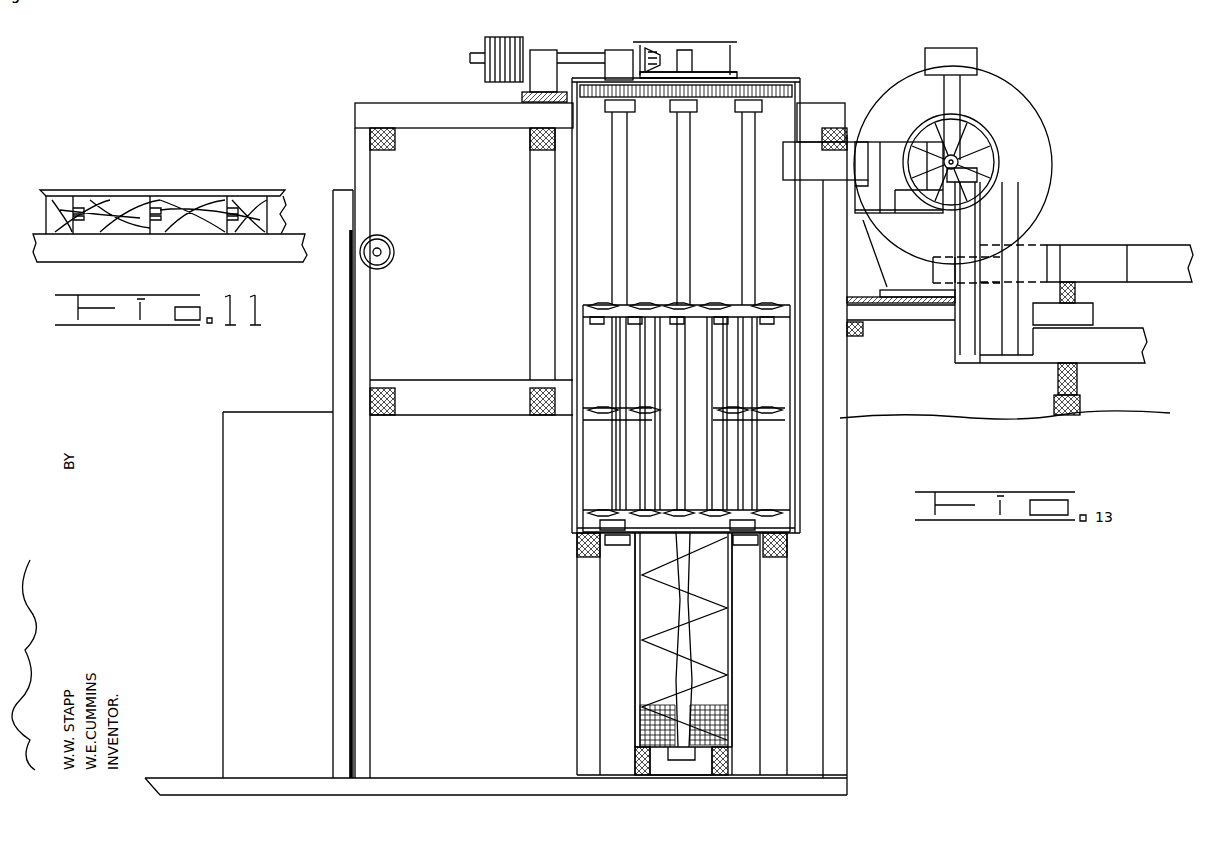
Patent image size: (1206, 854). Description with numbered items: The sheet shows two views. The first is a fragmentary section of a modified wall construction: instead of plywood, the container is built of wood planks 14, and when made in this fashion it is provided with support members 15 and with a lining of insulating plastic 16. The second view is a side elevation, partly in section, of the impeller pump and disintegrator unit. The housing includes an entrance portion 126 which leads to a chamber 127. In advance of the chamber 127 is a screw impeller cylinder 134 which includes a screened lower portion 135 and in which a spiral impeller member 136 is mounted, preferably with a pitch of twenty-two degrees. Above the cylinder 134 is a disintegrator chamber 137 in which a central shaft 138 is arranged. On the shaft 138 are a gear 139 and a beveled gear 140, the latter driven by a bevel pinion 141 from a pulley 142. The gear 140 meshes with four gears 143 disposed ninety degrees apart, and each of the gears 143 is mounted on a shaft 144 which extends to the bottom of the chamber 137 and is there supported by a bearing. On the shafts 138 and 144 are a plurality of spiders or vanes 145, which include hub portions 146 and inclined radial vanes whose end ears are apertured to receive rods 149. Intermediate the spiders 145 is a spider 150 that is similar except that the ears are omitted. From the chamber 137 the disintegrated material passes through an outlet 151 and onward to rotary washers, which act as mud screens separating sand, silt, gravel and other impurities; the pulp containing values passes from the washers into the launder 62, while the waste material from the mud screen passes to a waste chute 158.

In FIG. 11, the wood planks 14 is at (245, 238).
In FIG. 13, the wood planks 14 is at (810, 455).
In FIG. 11, the support members 15 is at (192, 262).
In FIG. 11, the lining of insulating plastic 16 is at (232, 176).
In FIG. 13, the launder 62 is at (1110, 250).
In FIG. 13, the entrance portion 126 is at (255, 625).
In FIG. 13, the chamber 127 is at (455, 780).
In FIG. 13, the screw impeller cylinder 134 is at (728, 625).
In FIG. 13, the screened lower portion 135 is at (728, 722).
In FIG. 13, the spiral impeller member 136 is at (690, 662).
In FIG. 13, the disintegrator chamber 137 is at (800, 363).
In FIG. 13, the central shaft 138 is at (690, 185).
In FIG. 13, the gear 139 is at (708, 102).
In FIG. 13, the beveled gear 140 is at (735, 78).
In FIG. 13, the bevel pinion 141 is at (650, 46).
In FIG. 13, the pulley 142 is at (523, 46).
In FIG. 13, the gears 143 is at (798, 82).
In FIG. 13, the shaft 144 is at (742, 238).
In FIG. 13, the spiders 145 is at (650, 305).
In FIG. 13, the hub portions 146 is at (690, 310).
In FIG. 13, the rods 149 is at (760, 397).
In FIG. 13, the spider 150 is at (760, 413).
In FIG. 13, the outlet 151 is at (833, 140).
In FIG. 13, the waste chute 158 is at (1110, 336).